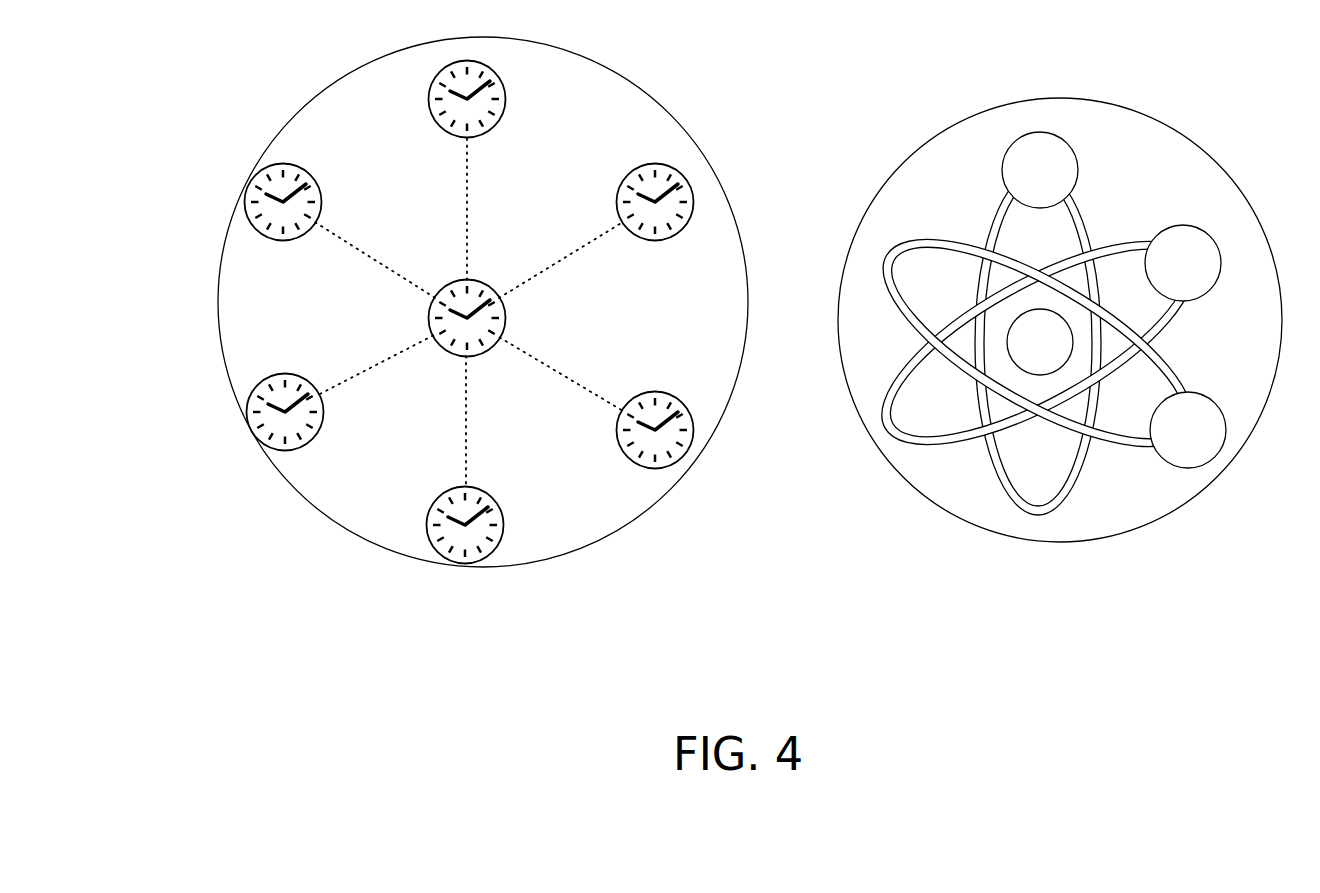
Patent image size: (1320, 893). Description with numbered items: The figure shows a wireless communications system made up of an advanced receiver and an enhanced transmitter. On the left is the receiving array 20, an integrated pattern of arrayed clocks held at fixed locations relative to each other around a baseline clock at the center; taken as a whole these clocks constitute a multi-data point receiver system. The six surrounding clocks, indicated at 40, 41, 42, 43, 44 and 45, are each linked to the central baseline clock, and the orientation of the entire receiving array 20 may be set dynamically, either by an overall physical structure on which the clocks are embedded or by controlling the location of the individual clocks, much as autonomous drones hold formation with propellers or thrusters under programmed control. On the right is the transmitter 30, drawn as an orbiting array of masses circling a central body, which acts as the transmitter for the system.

The receiving array 20 is at (355, 62).
The transmitter 30 is at (883, 455).
The reinforcement clock RC1 40 is at (482, 62).
The reinforcement clock RC2 41 is at (672, 162).
The reinforcement clock RC3 42 is at (668, 392).
The reinforcement clock RC4 43 is at (425, 525).
The reinforcement clock RC5 44 is at (257, 385).
The reinforcement clock RC6 45 is at (263, 163).